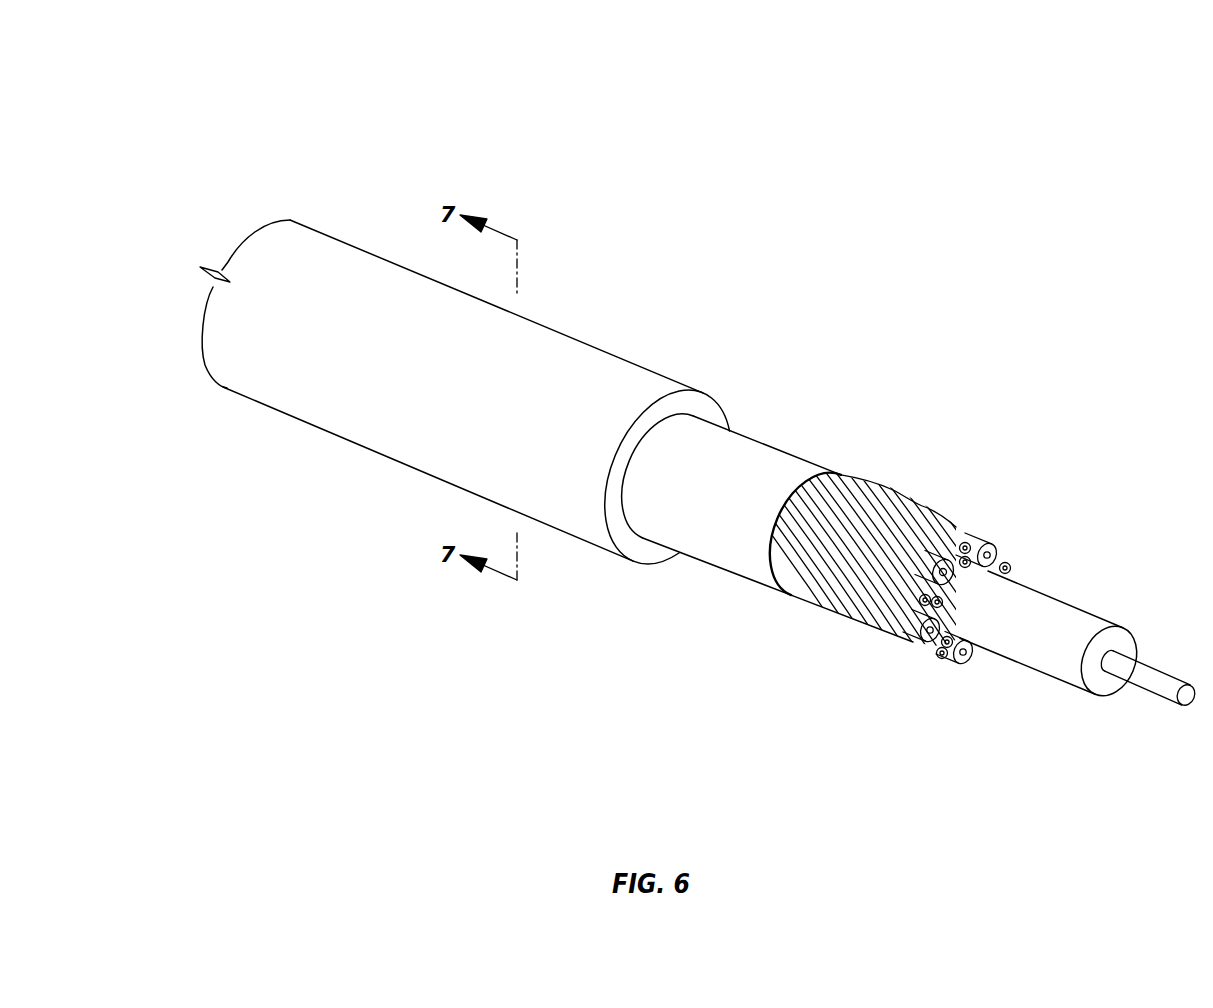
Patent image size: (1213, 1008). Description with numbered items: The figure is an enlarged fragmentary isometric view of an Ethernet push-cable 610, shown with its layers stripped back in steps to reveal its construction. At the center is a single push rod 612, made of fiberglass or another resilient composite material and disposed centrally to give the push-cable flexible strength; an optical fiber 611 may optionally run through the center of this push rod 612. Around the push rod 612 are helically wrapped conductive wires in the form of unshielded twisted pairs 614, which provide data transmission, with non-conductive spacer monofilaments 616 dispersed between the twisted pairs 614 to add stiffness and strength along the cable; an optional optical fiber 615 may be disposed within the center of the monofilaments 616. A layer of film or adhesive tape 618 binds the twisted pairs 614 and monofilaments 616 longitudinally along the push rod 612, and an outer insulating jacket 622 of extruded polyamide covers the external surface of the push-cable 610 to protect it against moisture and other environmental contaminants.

The Ethernet push-cable 610 is at (215, 101).
The outer insulating jacket 622 is at (633, 375).
The tape 618 is at (753, 455).
The monofilaments 616 is at (857, 517).
The unshielded twisted pairs 614 is at (853, 567).
The optical fiber 615 is at (930, 623).
The push rod 612 is at (1033, 603).
The optical fiber 611 is at (1160, 687).